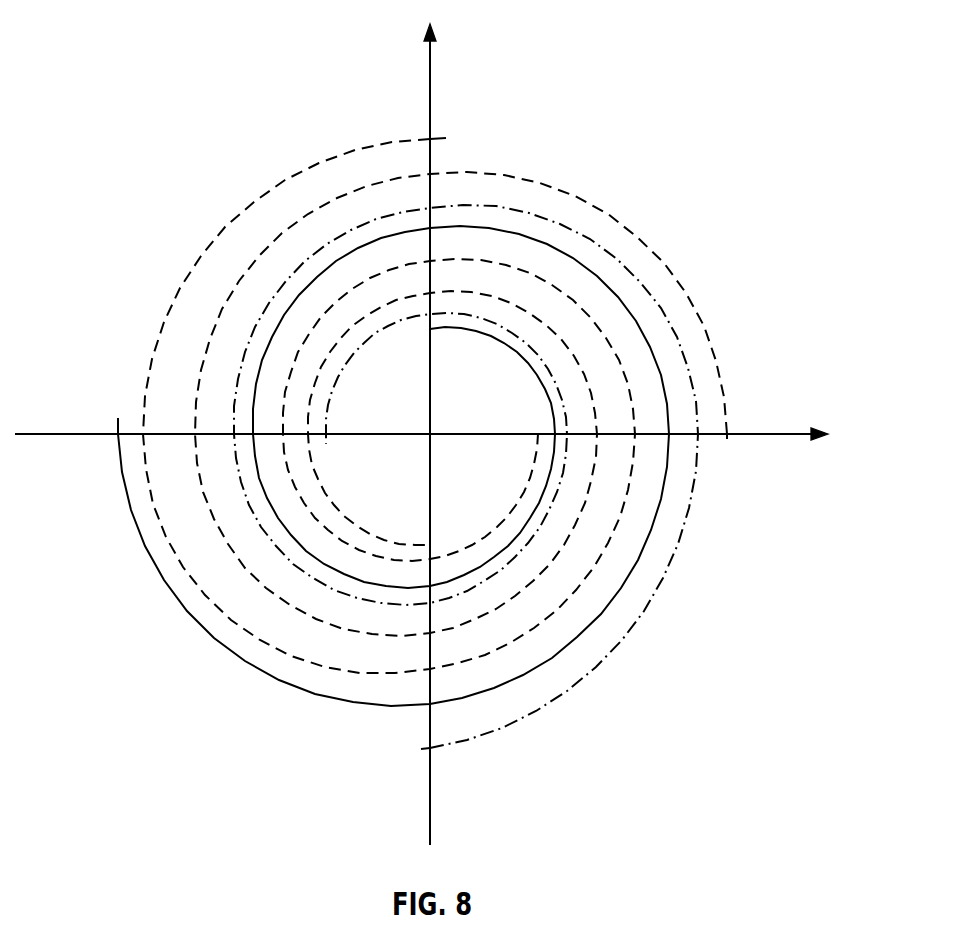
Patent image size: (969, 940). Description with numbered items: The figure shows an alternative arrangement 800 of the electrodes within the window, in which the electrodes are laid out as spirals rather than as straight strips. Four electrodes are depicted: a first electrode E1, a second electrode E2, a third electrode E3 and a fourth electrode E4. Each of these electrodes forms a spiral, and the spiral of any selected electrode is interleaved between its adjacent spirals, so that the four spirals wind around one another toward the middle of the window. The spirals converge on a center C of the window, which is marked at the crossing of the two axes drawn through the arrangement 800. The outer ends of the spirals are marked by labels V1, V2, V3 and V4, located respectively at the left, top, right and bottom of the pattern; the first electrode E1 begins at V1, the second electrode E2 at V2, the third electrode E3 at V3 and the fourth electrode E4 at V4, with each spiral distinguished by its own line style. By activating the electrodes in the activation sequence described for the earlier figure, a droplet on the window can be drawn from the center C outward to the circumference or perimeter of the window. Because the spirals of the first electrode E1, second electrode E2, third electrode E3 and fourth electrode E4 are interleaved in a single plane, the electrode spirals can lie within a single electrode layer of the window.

The alternative arrangement 800 is at (657, 76).
The center C is at (432, 432).
The first electrode E1 is at (175, 597).
The second electrode E2 is at (232, 226).
The third electrode E3 is at (633, 237).
The fourth electrode E4 is at (625, 638).
The first vertex V1 is at (119, 400).
The second vertex V2 is at (464, 137).
The third vertex V3 is at (727, 462).
The fourth vertex V4 is at (399, 750).